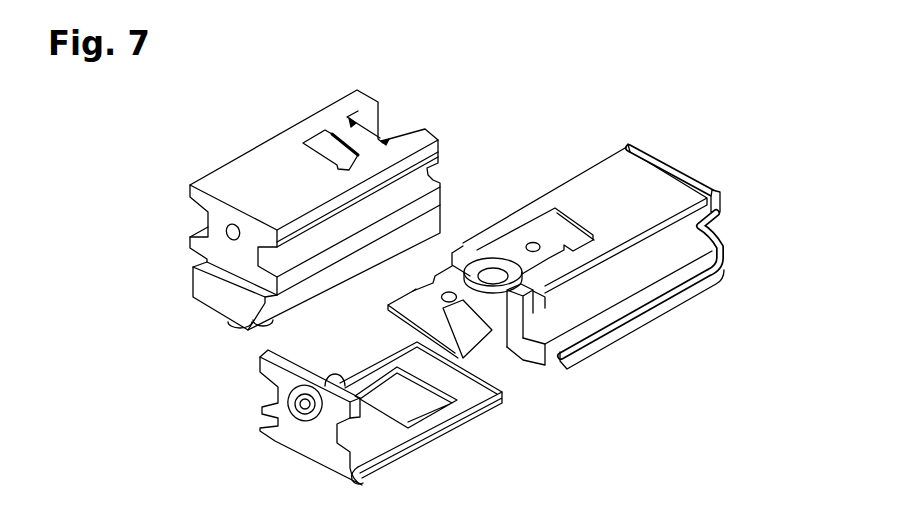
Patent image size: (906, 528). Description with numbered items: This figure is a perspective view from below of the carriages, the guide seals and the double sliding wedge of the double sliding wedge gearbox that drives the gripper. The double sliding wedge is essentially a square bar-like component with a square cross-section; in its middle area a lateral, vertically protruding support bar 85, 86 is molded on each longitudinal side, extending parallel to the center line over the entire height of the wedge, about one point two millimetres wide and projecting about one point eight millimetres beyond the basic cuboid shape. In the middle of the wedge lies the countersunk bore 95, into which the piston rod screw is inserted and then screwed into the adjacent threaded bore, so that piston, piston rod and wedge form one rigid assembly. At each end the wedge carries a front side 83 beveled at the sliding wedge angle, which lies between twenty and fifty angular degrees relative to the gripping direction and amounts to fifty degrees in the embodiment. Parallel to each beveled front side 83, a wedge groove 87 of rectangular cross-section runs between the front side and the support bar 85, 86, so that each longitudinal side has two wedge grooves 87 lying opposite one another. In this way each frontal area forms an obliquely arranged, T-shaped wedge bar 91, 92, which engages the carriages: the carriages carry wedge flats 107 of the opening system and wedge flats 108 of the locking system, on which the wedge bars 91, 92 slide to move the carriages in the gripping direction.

The front side 83 is at (420, 330).
The support bar 85 is at (462, 252).
The support bar 86 is at (586, 218).
The wedge groove 87 is at (480, 327).
The wedge bar 91 is at (416, 291).
The wedge bar 92 is at (522, 288).
The countersunk bore 95 is at (503, 260).
The wedge flats 107 is at (385, 142).
The wedge flats 108 is at (316, 152).